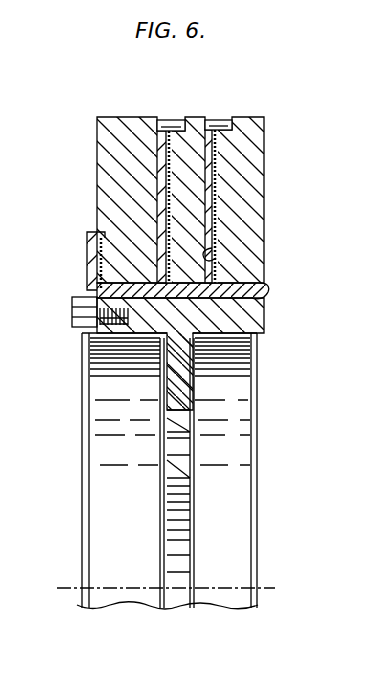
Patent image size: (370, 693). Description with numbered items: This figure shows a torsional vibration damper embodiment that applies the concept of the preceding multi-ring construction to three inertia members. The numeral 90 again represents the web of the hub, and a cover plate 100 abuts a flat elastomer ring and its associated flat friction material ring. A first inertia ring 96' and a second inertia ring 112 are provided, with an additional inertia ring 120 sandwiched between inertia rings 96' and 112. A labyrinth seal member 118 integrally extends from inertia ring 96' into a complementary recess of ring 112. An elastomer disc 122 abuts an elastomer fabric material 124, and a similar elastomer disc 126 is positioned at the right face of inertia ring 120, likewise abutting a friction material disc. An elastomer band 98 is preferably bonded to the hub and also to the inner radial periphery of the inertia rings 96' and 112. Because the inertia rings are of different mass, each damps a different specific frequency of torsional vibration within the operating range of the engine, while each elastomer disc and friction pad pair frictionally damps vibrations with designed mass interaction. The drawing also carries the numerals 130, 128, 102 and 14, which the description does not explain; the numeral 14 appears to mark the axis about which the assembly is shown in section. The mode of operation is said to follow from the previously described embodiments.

The first inertia ring 96' is at (180, 263).
The second inertia ring 112 is at (248, 180).
The labyrinth seal member 118 is at (175, 122).
The bolt head 130 is at (213, 122).
The elastomer disc 122 is at (185, 201).
The elastomer fabric material 124 is at (98, 224).
The additional inertia ring 120 is at (188, 206).
The bolt 128 is at (205, 228).
The elastomer disc 126 is at (208, 258).
The elastomer band 98 is at (258, 287).
The nut 102 is at (75, 325).
The cover plate 100 is at (82, 434).
The web 90 is at (190, 396).
The axis 14 is at (60, 585).